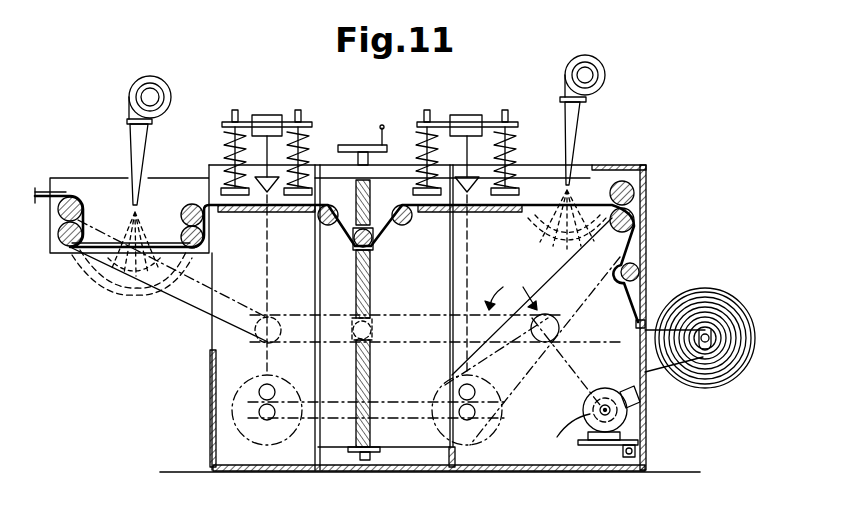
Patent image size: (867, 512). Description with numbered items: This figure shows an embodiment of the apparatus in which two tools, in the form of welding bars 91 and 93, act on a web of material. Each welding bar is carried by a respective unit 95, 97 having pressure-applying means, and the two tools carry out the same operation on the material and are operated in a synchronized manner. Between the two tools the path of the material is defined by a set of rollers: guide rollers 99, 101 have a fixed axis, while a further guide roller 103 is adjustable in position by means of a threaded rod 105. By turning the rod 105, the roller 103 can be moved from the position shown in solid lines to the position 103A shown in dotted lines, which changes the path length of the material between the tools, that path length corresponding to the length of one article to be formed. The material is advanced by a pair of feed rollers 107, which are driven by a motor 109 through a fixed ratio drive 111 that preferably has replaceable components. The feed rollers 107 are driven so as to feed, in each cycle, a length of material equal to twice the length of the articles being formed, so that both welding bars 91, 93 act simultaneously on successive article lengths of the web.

The welding bar 91 is at (265, 148).
The welding bar 93 is at (472, 154).
The unit 95 is at (264, 112).
The unit 97 is at (468, 110).
The guide roller 99 is at (404, 223).
The guide roller 101 is at (316, 223).
The guide roller 103 is at (372, 248).
The position of guide roller 103A is at (372, 336).
The threaded rod 105 is at (369, 293).
The feed rollers 107 is at (648, 197).
The motor 109 is at (573, 424).
The fixed ratio drive 111 is at (558, 270).